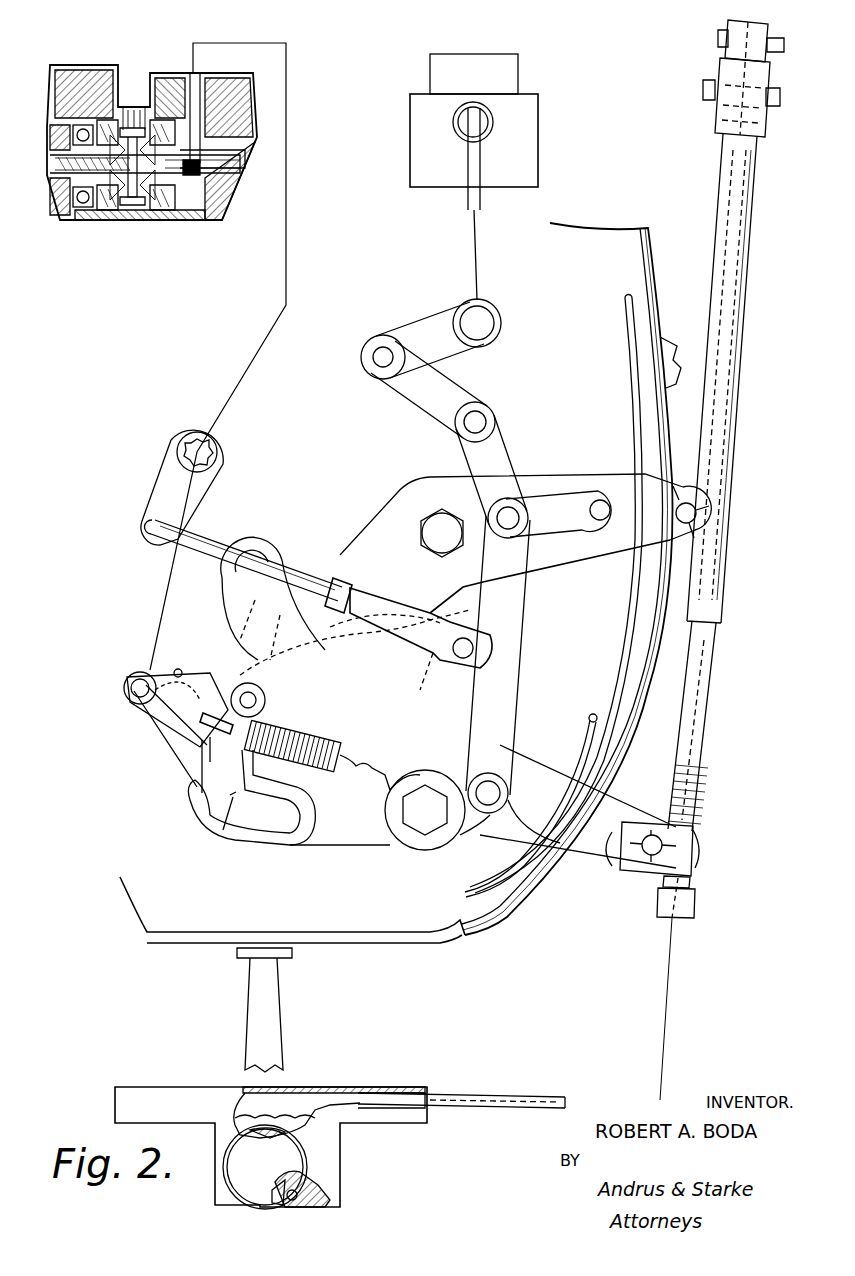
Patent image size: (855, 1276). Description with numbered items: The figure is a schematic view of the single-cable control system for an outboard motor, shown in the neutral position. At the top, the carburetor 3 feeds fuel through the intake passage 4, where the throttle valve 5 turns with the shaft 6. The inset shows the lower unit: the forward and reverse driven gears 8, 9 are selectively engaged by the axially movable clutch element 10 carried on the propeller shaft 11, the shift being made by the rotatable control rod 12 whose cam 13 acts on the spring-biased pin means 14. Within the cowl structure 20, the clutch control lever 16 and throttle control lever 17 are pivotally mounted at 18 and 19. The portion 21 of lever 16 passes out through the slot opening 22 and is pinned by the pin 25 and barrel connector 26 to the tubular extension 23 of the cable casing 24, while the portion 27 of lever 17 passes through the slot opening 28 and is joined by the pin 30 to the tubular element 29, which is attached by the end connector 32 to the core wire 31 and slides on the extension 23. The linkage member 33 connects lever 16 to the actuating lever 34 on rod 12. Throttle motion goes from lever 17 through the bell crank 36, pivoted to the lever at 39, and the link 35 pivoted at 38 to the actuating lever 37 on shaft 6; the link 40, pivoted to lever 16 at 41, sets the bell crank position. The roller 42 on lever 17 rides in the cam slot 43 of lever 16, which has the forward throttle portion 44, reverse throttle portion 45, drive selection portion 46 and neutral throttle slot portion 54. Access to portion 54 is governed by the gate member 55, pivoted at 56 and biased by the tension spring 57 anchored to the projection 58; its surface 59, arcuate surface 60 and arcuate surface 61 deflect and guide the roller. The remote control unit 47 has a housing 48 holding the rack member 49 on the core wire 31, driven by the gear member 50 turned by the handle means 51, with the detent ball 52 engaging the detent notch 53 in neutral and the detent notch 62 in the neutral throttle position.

The carburetor 3 is at (540, 107).
The intake passage 4 is at (455, 122).
The throttle valve 5 is at (462, 137).
The shaft 6 is at (482, 198).
The forward driven gear 8 is at (162, 210).
The reverse driven gear 9 is at (92, 207).
The clutch element 10 is at (112, 210).
The propeller shaft 11 is at (50, 163).
The control rod 12 is at (192, 78).
The cam 13 is at (200, 170).
The pin means 14 is at (134, 205).
The clutch control lever 16 is at (362, 848).
The throttle control lever 17 is at (388, 513).
The pivot 18 is at (425, 835).
The pivot 19 is at (440, 510).
The cowl structure 20 is at (500, 930).
The portion 21 is at (610, 855).
The slot opening 22 is at (590, 722).
The tubular extension 23 is at (702, 722).
The cable casing 24 is at (696, 905).
The pin 25 is at (650, 856).
The barrel connector 26 is at (696, 850).
The portion 27 is at (684, 490).
The slot opening 28 is at (630, 368).
The tubular element 29 is at (748, 296).
The pin 30 is at (691, 515).
The core wire 31 is at (675, 932).
The end connector 32 is at (718, 120).
The linkage member 33 is at (330, 565).
The actuating lever 34 is at (160, 484).
The link 35 is at (430, 406).
The bell crank 36 is at (505, 460).
The actuating lever 37 is at (425, 325).
The pivot 38 is at (485, 422).
The pivot 39 is at (600, 500).
The link 40 is at (512, 644).
The pivot 41 is at (500, 793).
The roller 42 is at (265, 706).
The cam slot 43 is at (223, 830).
The forward throttle portion 44 is at (285, 540).
The reverse throttle portion 45 is at (280, 826).
The drive selection portion 46 is at (300, 688).
The control unit 47 is at (225, 1185).
The housing 48 is at (180, 1087).
The rack member 49 is at (348, 1092).
The gear member 50 is at (250, 1130).
The handle means 51 is at (275, 1004).
The detent ball 52 is at (290, 1205).
The detent notch 53 is at (272, 1197).
The neutral throttle slot portion 54 is at (165, 668).
The gate member 55 is at (150, 712).
The pivot 56 is at (128, 684).
The tension spring 57 is at (320, 732).
The projection 58 is at (385, 772).
The surface 59 is at (230, 680).
The arcuate surface 60 is at (226, 745).
The arcuate surface 61 is at (165, 742).
The detent notch 62 is at (305, 1180).